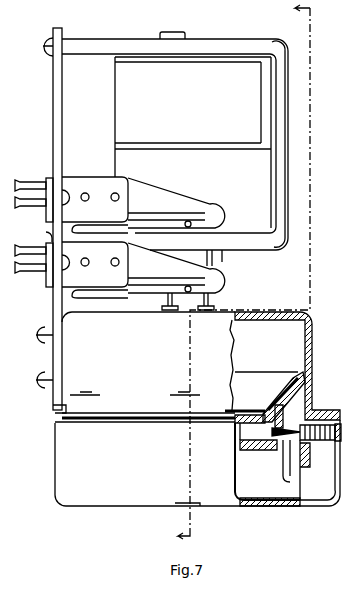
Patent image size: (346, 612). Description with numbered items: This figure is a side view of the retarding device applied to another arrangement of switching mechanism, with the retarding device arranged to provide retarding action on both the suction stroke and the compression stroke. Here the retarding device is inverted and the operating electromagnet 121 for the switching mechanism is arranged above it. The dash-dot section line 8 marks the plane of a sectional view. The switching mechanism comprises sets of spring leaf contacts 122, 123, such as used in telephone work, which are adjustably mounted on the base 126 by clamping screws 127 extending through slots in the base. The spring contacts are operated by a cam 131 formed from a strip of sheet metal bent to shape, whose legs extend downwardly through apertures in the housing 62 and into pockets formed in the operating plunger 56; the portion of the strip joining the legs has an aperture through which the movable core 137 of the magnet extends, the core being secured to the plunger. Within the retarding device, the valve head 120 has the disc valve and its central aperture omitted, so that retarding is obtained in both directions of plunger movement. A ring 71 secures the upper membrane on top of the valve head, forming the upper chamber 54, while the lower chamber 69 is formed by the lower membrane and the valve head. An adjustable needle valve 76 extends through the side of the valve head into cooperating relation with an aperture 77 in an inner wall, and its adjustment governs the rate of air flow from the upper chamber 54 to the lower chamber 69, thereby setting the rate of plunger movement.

The section line 8- 8 is at (234, 273).
The upper chamber 54 is at (238, 483).
The operating plunger 56 is at (250, 372).
The housing 62 is at (313, 352).
The lower chamber 69 is at (240, 437).
The ring 71 is at (307, 462).
The adjustable needle valve 76 is at (286, 462).
The aperture 77 is at (287, 450).
The valve head 120 is at (257, 450).
The operating electromagnet 121 is at (193, 142).
The set of spring leaf contacts 122 is at (222, 279).
The set of spring leaf contacts 123 is at (210, 207).
The base 126 is at (52, 121).
The clamping screws 127 is at (68, 205).
The cam 131 is at (179, 311).
The movable core 137 is at (212, 260).